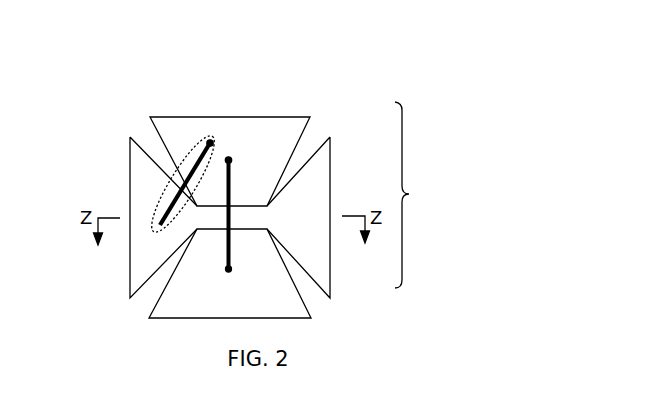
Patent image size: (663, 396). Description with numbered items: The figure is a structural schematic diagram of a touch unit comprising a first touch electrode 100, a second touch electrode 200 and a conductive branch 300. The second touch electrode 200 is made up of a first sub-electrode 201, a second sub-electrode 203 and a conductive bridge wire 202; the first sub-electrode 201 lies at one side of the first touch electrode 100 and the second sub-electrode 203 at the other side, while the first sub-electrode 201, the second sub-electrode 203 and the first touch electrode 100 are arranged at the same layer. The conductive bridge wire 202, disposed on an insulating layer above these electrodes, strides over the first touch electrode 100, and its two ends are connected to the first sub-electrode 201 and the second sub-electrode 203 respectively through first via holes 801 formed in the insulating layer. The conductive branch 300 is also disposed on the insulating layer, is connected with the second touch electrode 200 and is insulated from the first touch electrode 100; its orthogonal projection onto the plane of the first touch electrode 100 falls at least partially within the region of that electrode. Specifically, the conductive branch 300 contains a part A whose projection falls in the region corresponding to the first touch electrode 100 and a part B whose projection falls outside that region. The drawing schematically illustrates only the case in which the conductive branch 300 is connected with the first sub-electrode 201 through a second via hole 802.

The first touch electrode 100 is at (135, 271).
The second touch electrode 200 is at (424, 195).
The first sub-electrode 201 is at (290, 136).
The conductive bridge wire 202 is at (243, 212).
The second sub-electrode 203 is at (259, 290).
The conductive branch 300 is at (228, 72).
The first via holes 801 is at (240, 154).
The second via hole 802 is at (222, 135).
The part A of the conductive branch A is at (165, 186).
The part B of the conductive branch B is at (217, 127).